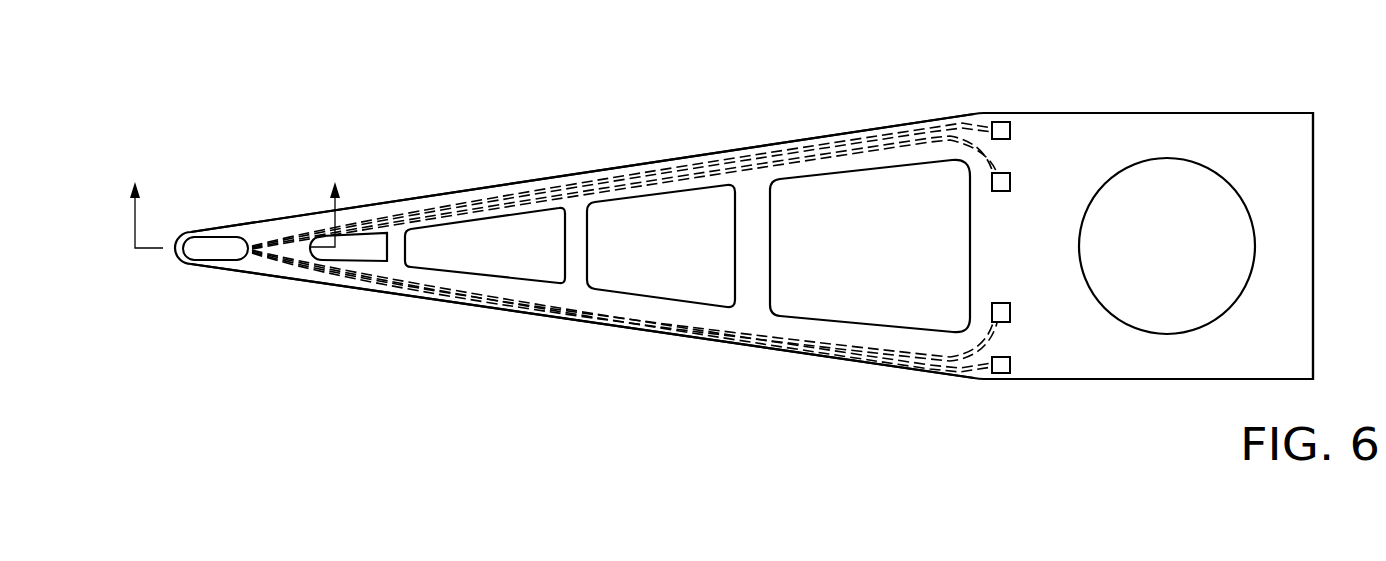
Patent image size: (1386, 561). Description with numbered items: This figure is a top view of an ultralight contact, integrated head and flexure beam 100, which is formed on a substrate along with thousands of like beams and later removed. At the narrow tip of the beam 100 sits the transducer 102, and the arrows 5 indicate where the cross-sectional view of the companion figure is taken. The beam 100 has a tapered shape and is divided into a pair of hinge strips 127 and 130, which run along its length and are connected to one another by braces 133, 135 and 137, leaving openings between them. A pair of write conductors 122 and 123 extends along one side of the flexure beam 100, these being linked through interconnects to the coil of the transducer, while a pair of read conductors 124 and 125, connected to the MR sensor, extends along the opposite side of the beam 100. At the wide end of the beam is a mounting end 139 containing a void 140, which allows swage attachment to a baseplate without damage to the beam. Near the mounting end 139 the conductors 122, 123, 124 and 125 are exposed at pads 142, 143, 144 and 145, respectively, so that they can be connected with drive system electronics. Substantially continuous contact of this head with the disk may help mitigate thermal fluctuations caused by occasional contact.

The integrated head and flexure beam 100 is at (571, 124).
The transducer 102 is at (212, 228).
The write conductor 122 is at (709, 319).
The write conductor 123 is at (606, 318).
The read conductor 124 is at (755, 166).
The read conductor 125 is at (874, 135).
The hinge strip 127 is at (703, 154).
The hinge strip 130 is at (847, 362).
The brace 133 is at (766, 250).
The brace 135 is at (582, 250).
The brace 137 is at (406, 246).
The mounting end 139 is at (1143, 381).
The void 140 is at (1177, 157).
The pad 142 is at (1011, 312).
The pad 143 is at (1011, 365).
The pad 144 is at (1011, 182).
The pad 145 is at (1011, 130).
The arrows 5- 5 is at (237, 199).